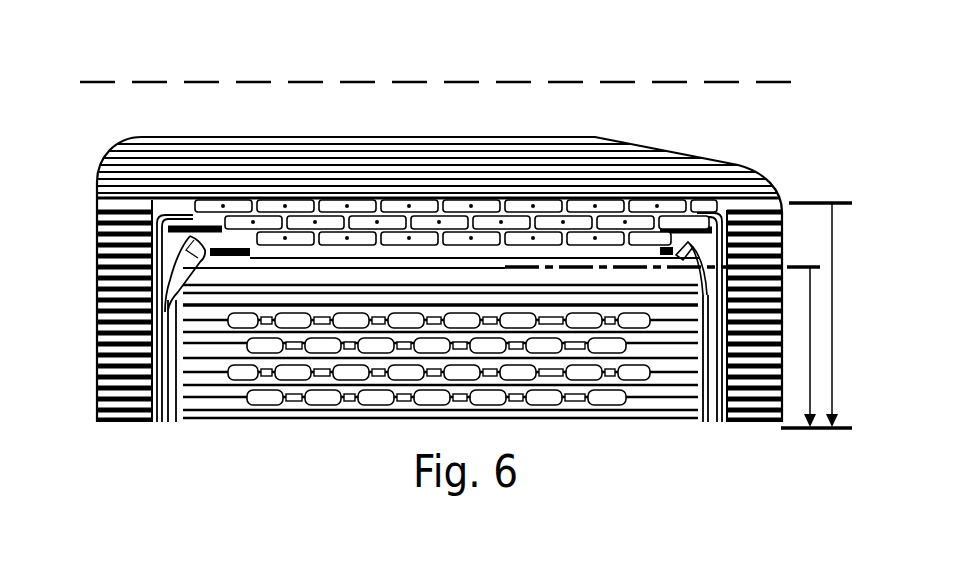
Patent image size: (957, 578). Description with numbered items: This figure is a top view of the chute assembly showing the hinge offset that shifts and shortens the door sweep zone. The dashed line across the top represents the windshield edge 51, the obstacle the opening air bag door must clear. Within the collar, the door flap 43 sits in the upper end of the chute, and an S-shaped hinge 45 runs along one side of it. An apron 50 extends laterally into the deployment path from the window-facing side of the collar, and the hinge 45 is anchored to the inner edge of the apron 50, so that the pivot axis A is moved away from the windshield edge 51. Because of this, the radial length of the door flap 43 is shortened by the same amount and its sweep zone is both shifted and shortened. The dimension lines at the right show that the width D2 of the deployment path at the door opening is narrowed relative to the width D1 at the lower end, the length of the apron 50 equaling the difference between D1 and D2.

The windshield edge 51 is at (248, 82).
The apron 50 is at (238, 217).
The S-shaped hinge 45 is at (210, 276).
The door flap 43 is at (382, 375).
The pivot axis A is at (790, 266).
The width of deployment path at lower end D1 is at (834, 272).
The width of deployment path at upper end D2 is at (812, 345).